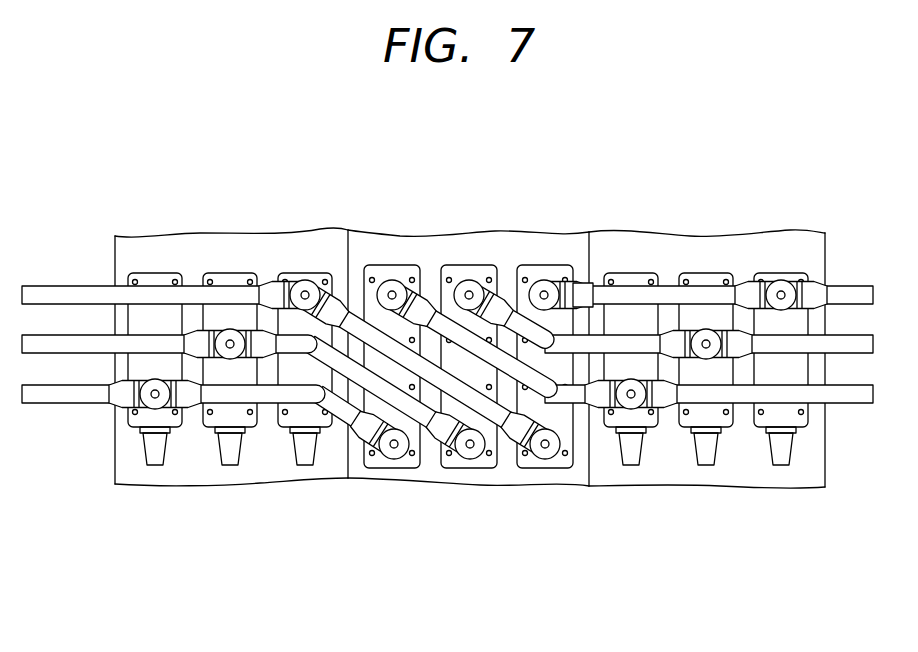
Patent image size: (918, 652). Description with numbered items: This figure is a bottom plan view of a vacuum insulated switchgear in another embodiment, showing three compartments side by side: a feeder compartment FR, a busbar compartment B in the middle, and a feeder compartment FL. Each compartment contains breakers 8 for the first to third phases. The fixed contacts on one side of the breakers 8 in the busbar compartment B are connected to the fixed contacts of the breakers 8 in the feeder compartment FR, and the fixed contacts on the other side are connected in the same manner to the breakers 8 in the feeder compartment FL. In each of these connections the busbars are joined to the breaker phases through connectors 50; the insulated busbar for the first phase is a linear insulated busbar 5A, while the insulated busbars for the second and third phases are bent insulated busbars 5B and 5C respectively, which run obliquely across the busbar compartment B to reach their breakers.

The breaker 8 is at (160, 274).
The linear insulated busbar 5A is at (375, 332).
The bent insulated busbar 5B is at (632, 334).
The bent insulated busbar 5C is at (503, 363).
The connector 50 is at (786, 281).
The feeder compartment FR is at (250, 233).
The feeder compartment FL is at (757, 233).
The busbar compartment B is at (490, 234).